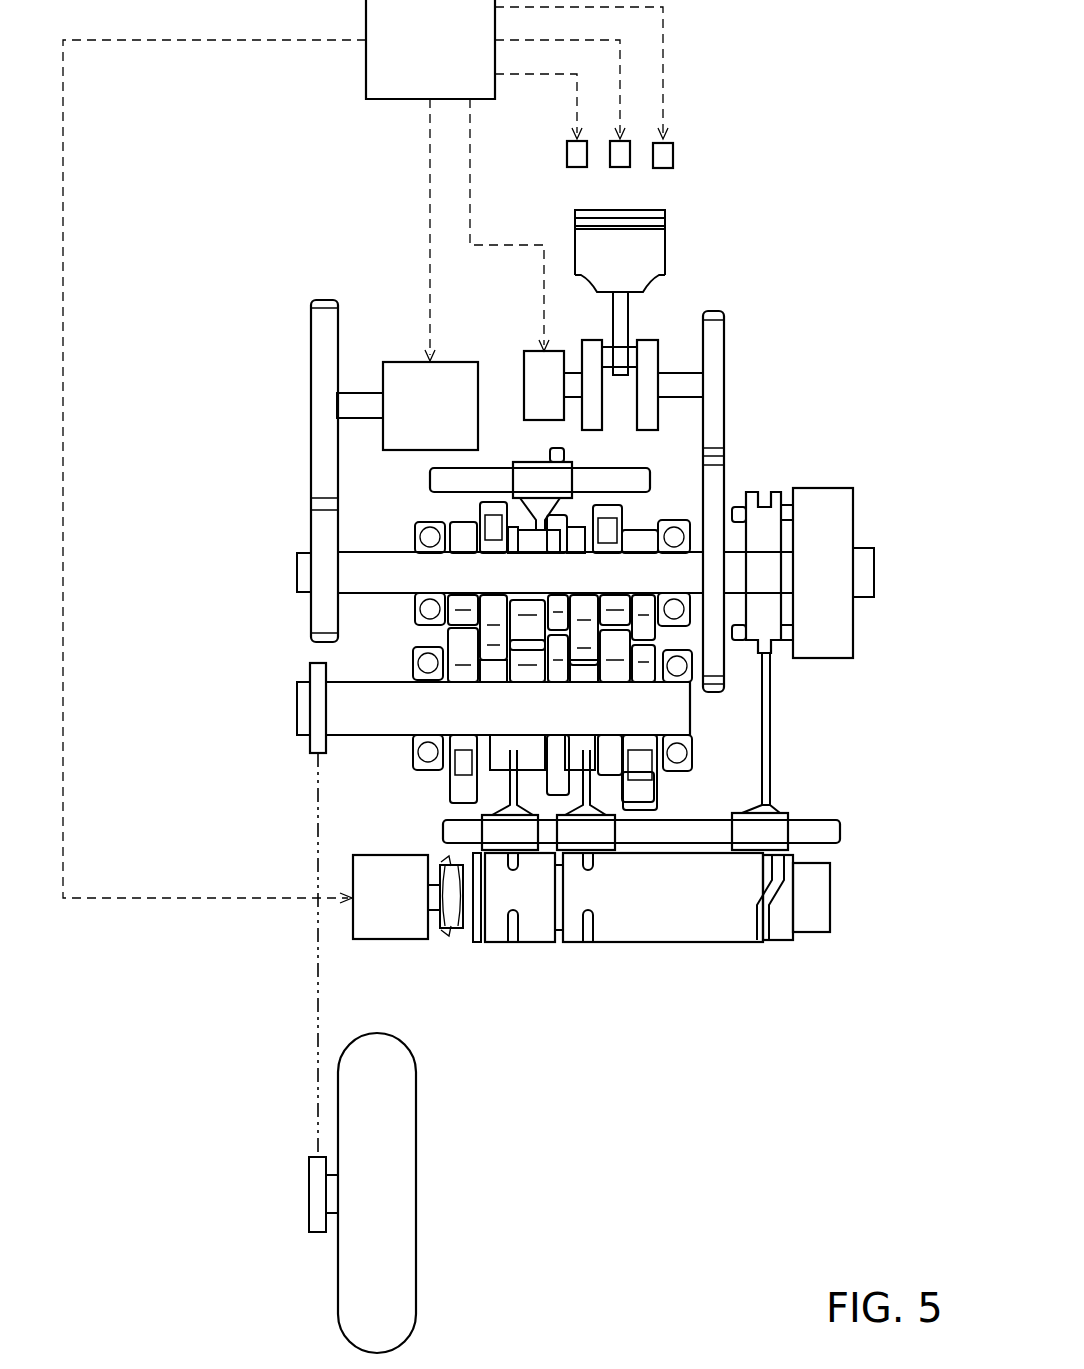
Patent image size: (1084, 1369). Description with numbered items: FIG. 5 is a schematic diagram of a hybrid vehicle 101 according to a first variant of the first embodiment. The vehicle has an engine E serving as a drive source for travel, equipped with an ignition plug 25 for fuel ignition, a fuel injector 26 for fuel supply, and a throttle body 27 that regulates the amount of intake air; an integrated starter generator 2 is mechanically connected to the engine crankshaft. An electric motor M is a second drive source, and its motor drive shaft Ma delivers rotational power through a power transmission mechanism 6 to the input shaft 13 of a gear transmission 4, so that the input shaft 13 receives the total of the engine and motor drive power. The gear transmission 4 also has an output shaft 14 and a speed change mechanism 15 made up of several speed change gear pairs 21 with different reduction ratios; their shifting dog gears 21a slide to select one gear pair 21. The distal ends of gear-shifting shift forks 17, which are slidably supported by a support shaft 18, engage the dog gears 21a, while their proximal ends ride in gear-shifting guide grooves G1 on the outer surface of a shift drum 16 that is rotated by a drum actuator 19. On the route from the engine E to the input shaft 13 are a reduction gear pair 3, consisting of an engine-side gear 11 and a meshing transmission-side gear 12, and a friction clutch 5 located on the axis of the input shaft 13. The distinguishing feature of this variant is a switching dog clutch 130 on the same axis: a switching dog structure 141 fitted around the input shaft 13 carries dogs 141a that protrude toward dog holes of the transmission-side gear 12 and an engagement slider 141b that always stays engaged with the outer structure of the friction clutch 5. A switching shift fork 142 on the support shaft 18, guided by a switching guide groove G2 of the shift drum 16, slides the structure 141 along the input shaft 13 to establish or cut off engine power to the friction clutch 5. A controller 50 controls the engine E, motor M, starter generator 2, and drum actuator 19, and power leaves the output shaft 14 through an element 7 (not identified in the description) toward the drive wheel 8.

The controller 50 is at (366, 10).
The hybrid vehicle 101 is at (932, 12).
The engine E is at (733, 140).
The ignition plug 25 is at (567, 155).
The fuel injector 26 is at (620, 168).
The throttle body 27 is at (673, 155).
The reduction gear pair 3 is at (704, 340).
The integrated starter generator 2 is at (524, 380).
The electric motor M is at (416, 362).
The motor drive shaft Ma is at (360, 393).
The power transmission mechanism 6 is at (311, 455).
The input shaft 13 is at (297, 572).
The output shaft 14 is at (297, 712).
The gear transmission 4 is at (402, 538).
The speed change mechanism 15 is at (412, 658).
The gear-shifting shift fork 17 is at (540, 468).
The support shaft 18 is at (655, 482).
The shifting dog gear 21a is at (575, 497).
The speed change gear pair 21 is at (655, 800).
The engine-side gear 11 is at (725, 386).
The transmission-side gear 12 is at (722, 470).
The switching dog structure 141 is at (748, 500).
The dogs 141a is at (738, 641).
The engagement slider 141b is at (787, 655).
The switching dog clutch 130 is at (806, 378).
The switching shift fork 142 is at (770, 770).
The friction clutch 5 is at (853, 620).
The shift drum 16 is at (830, 890).
The gear-shifting guide groove G1 is at (595, 930).
The switching guide groove G2 is at (757, 935).
The drum actuator 19 is at (397, 940).
The chain 7 is at (318, 970).
The drive wheel 8 is at (405, 1190).